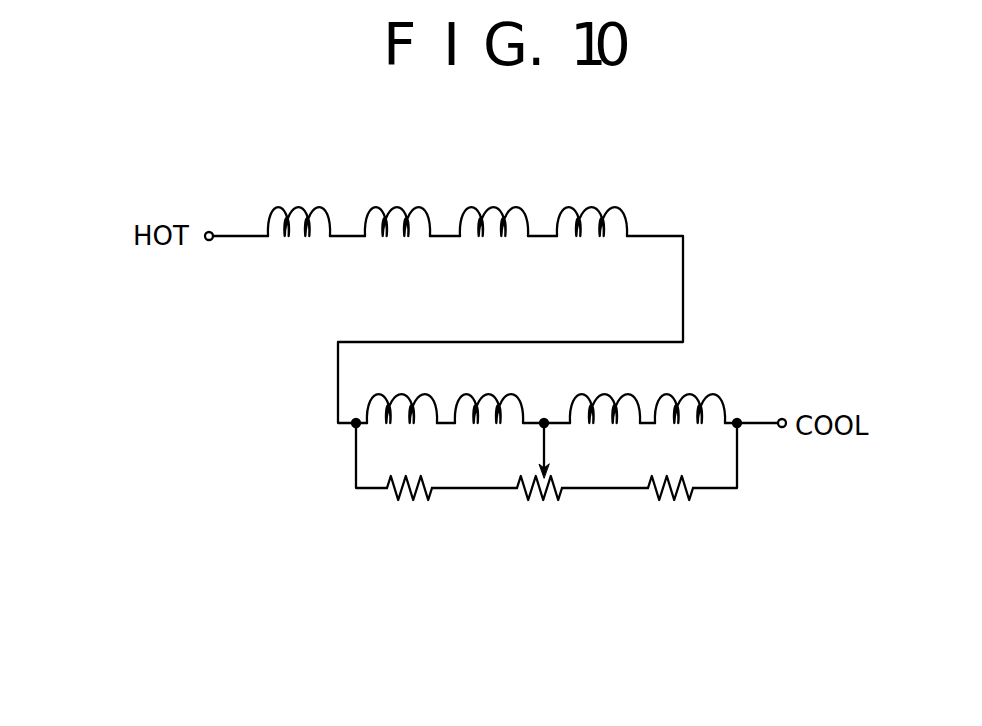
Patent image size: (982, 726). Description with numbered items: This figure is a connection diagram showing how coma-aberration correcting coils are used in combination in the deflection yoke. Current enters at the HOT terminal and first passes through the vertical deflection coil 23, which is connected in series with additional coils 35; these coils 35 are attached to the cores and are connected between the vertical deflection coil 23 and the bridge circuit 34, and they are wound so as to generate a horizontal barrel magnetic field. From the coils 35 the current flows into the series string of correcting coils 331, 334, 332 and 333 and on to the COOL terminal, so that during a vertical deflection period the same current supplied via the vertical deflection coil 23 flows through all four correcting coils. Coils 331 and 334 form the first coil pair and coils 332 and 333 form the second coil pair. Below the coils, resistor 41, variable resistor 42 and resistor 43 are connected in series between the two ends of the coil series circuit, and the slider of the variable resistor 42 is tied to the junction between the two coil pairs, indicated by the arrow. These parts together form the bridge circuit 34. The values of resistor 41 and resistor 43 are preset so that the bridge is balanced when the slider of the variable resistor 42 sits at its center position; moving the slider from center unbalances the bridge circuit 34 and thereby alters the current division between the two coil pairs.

The vertical deflection coil 23 is at (430, 176).
The coils 35 is at (625, 176).
The coil 331 is at (402, 393).
The coil 334 is at (489, 393).
The coil 332 is at (605, 393).
The coil 333 is at (690, 393).
The bridge circuit 34 is at (498, 508).
The resistor 41 is at (409, 507).
The variable resistor 42 is at (539, 507).
The resistor 43 is at (670, 507).